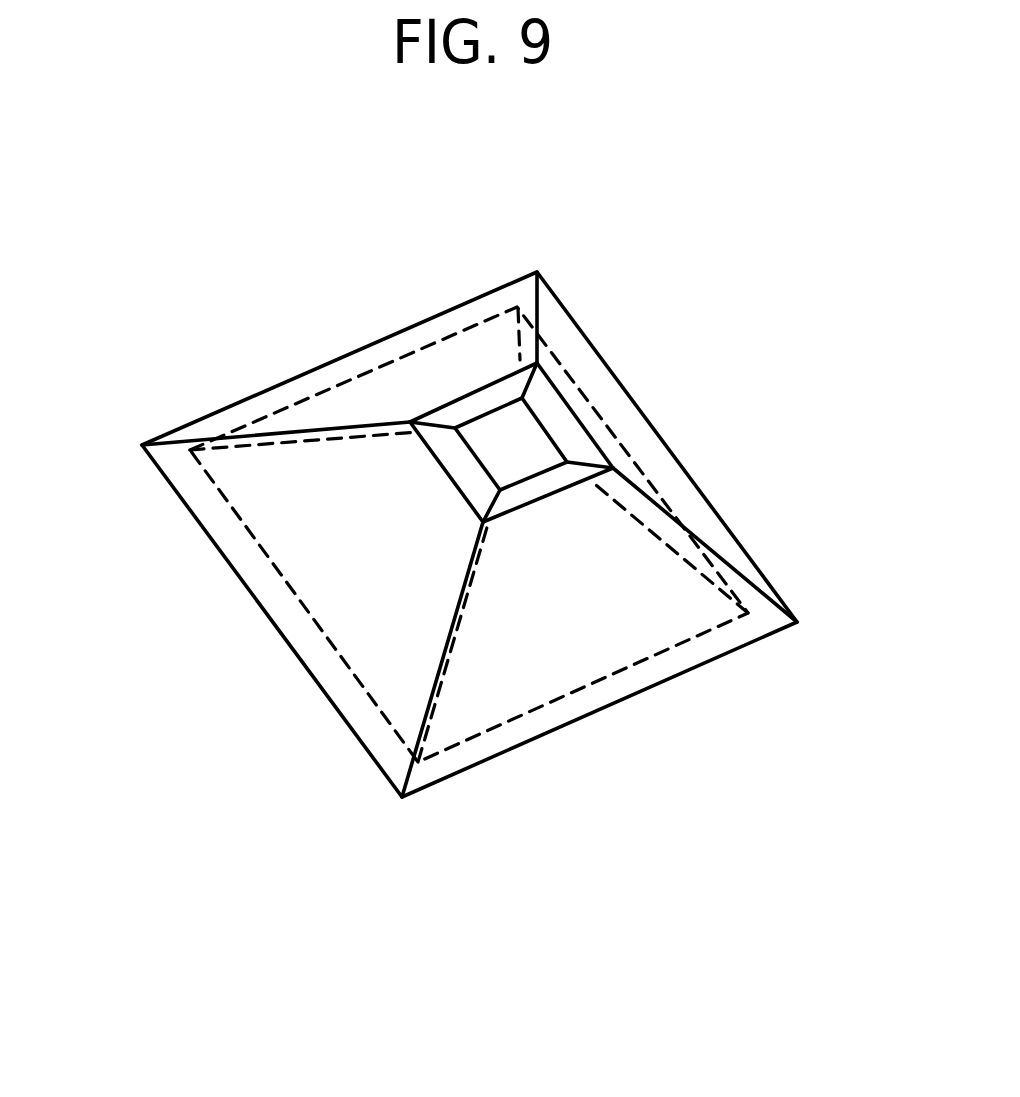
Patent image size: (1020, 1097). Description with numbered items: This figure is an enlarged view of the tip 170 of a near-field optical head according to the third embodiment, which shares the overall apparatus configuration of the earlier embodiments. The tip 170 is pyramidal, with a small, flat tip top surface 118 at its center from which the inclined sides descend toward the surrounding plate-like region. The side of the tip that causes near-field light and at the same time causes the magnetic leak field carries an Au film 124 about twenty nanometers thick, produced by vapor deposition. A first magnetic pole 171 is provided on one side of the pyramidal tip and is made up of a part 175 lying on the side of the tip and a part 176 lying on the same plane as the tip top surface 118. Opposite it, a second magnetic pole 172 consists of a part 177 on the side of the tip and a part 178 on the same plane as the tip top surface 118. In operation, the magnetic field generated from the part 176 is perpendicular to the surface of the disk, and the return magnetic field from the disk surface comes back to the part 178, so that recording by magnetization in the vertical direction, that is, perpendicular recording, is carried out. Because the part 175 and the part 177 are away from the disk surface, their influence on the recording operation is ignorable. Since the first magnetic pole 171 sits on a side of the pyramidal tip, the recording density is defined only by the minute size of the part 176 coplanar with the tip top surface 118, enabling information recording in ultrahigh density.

The tip 170 is at (666, 98).
The Au film 124 is at (423, 373).
The tip top surface 118 is at (522, 440).
The first magnetic pole 171 is at (802, 299).
The part on a side of the tip of the first magnetic pole 175 is at (657, 455).
The part on the same plane as the tip top surface of the first magnetic pole 176 is at (567, 422).
The second magnetic pole 172 is at (125, 622).
The part in a side of the tip of the second magnetic pole 177 is at (367, 632).
The part on the same plane of the tip top surface of the second magnetic pole 178 is at (453, 468).